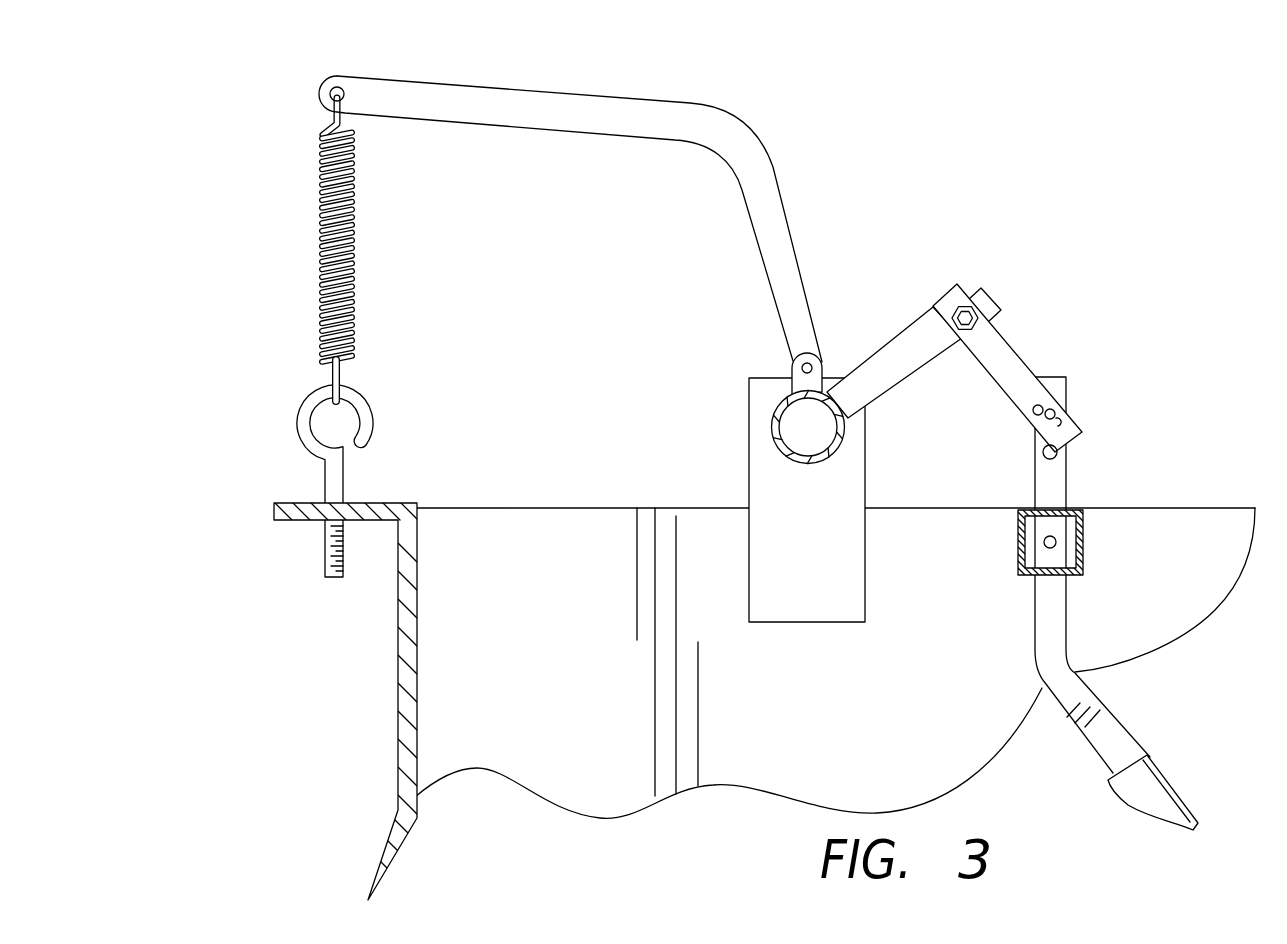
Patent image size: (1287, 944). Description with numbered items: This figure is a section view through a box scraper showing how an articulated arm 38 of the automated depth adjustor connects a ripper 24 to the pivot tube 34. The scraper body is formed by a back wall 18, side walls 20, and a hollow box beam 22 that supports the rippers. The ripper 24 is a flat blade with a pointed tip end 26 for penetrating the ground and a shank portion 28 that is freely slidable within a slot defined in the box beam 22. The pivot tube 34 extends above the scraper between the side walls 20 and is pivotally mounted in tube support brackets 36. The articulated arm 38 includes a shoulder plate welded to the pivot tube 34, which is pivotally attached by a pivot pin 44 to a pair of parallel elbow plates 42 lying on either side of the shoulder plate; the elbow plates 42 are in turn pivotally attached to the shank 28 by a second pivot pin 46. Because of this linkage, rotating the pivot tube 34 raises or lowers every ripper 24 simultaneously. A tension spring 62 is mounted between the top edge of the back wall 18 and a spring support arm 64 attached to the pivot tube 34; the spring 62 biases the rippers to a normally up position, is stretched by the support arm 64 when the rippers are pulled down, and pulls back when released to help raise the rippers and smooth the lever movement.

The back wall 18 is at (397, 718).
The side walls 20 is at (557, 556).
The hollow box beam 22 is at (1083, 537).
The ripper 24 is at (992, 680).
The pointed tip end 26 is at (1180, 790).
The shank portion 28 is at (1068, 592).
The pivot tube 34 is at (770, 432).
The tube support bracket 36 is at (867, 483).
The articulated arm 38 is at (879, 327).
The elbow plates 42 is at (1020, 361).
The pivot pin 44 is at (978, 323).
The second pivot pin 46 is at (1067, 403).
The tension spring 62 is at (355, 256).
The spring support arm 64 is at (555, 92).